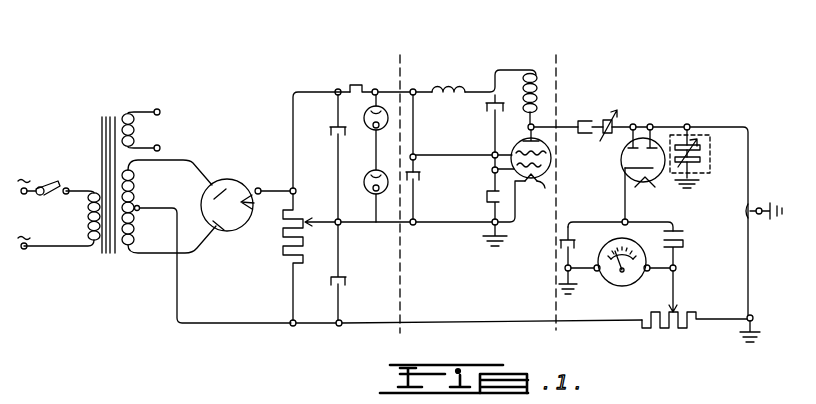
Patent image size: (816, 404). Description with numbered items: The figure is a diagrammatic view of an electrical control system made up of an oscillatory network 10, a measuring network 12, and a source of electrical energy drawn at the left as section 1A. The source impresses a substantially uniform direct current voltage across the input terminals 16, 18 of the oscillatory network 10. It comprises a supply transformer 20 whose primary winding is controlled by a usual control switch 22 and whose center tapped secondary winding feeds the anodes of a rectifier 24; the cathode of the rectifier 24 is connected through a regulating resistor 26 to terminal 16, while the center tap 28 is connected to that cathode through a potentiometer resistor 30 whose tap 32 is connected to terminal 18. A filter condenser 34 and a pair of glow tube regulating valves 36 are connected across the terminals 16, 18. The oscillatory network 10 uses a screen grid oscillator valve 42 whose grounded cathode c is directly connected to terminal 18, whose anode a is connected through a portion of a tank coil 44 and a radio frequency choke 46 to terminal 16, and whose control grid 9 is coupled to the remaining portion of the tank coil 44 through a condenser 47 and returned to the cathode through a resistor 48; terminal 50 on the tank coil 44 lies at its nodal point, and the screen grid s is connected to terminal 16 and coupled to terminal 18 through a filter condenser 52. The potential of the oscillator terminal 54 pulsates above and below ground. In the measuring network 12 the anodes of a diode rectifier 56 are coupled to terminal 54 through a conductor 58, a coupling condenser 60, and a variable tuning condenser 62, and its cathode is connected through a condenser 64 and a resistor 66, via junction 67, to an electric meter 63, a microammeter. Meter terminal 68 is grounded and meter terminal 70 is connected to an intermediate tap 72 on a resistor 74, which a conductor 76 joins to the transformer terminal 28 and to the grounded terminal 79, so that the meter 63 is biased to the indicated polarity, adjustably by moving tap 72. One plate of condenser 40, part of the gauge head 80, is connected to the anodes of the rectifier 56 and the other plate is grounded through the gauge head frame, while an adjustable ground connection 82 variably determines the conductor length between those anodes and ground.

The power supply section 1A is at (243, 291).
The oscillatory network 10 is at (470, 292).
The measuring network 12 is at (722, 290).
The supply transformer 20 is at (102, 167).
The control switch 22 is at (43, 215).
The rectifier 24 is at (235, 181).
The regulating resistor 26 is at (352, 87).
The center tap 28 is at (140, 207).
The potentiometer resistor 30 is at (283, 241).
The tap 32 is at (312, 220).
The filter condenser 34 is at (331, 127).
The glow tube regulating valves 36 is at (389, 118).
The input terminal 16 is at (418, 86).
The input terminal 18 is at (417, 222).
The radio frequency choke 46 is at (456, 82).
The condenser 47 is at (481, 123).
The resistor 48 is at (487, 191).
The terminal 50 is at (518, 93).
The tank coil 44 is at (537, 85).
The filter condenser 52 is at (420, 174).
The oscillator valve 42 is at (551, 156).
The anode a is at (523, 137).
The screen grid s is at (512, 153).
The control grid 9 is at (551, 165).
The cathode c is at (548, 192).
The oscillator terminal 54 is at (546, 119).
The conductor 58 is at (580, 121).
The coupling condenser 60 is at (604, 117).
The variable trimmer or tuning condenser 62 is at (623, 116).
The condenser 40 is at (705, 131).
The gauge head 80 is at (719, 171).
The adjustable ground connection 82 is at (760, 206).
The diode rectifier 56 is at (626, 168).
The junction 67 is at (628, 221).
The resistor 66 is at (683, 232).
The condenser 64 is at (560, 243).
The meter terminal 68 is at (565, 269).
The electric meter 63 is at (628, 284).
The meter terminal 70 is at (677, 267).
The intermediate tap 72 is at (677, 311).
The resistor 74 is at (661, 328).
The grounded terminal 79 is at (753, 320).
The conductor 76 is at (391, 321).